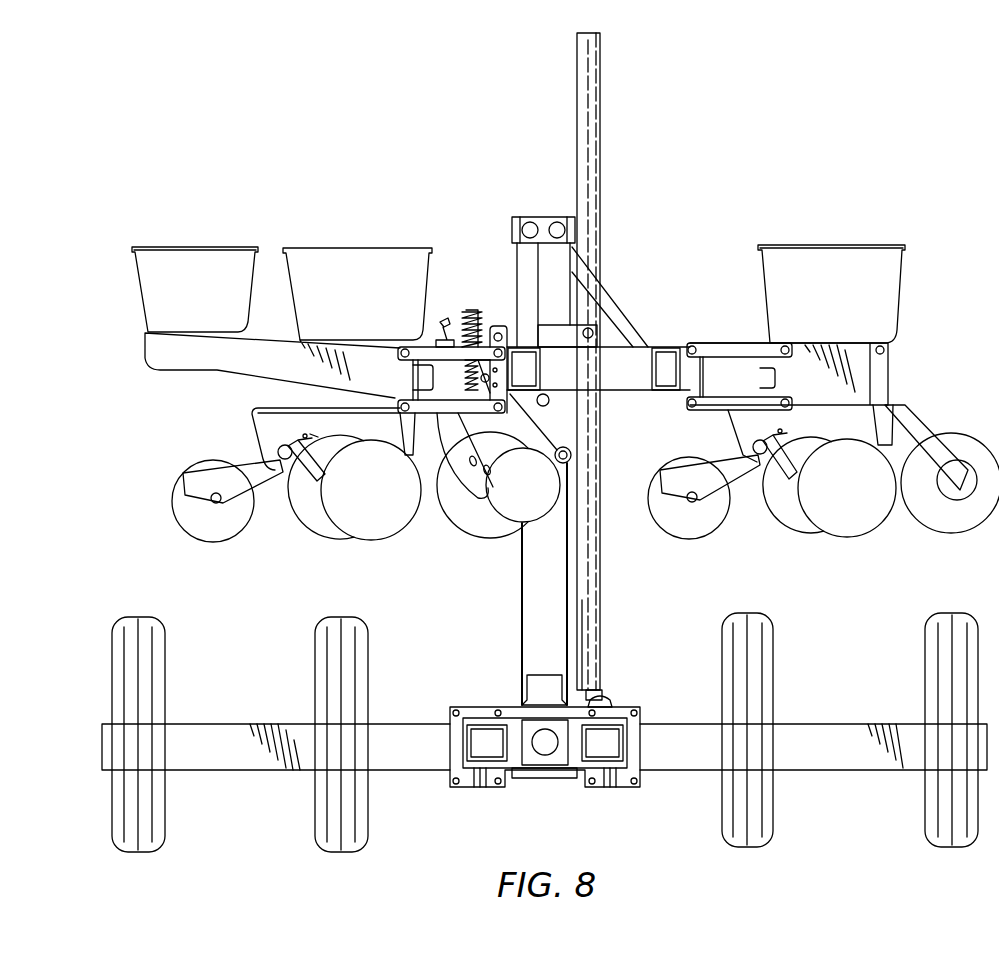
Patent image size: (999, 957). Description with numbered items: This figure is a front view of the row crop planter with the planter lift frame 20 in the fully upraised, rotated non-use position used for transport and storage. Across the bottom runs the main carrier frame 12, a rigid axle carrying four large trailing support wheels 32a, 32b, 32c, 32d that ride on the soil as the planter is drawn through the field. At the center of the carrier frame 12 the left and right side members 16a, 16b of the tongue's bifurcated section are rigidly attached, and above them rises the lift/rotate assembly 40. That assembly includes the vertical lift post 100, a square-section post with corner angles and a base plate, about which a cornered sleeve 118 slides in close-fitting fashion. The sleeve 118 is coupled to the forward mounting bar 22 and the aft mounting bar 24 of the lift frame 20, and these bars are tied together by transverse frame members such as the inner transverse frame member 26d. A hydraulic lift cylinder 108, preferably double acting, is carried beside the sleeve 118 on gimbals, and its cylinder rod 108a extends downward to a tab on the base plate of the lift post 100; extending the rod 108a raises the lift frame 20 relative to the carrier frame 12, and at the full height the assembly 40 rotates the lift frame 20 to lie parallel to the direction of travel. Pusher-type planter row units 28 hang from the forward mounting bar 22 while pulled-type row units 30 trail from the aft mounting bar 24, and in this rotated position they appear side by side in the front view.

The lift cylinder 108 is at (593, 92).
The cylinder rod 108a is at (592, 642).
The sleeve 118 is at (550, 255).
The vertical lift post 100 is at (530, 610).
The planter lift frame 20 is at (613, 278).
The inner transverse frame member 26d is at (623, 380).
The aft mounting bar 24 is at (523, 347).
The forward mounting bar 22 is at (665, 353).
The pulled-type row unit 30 is at (276, 228).
The pusher-type planter row unit 28 is at (908, 303).
The lift/rotate assembly 40 is at (487, 657).
The right side member 16b is at (477, 757).
The left side member 16a is at (612, 757).
The main carrier frame 12 is at (203, 762).
The support wheel 32a is at (935, 628).
The support wheel 32b is at (760, 625).
The support wheel 32c is at (325, 640).
The support wheel 32d is at (152, 630).